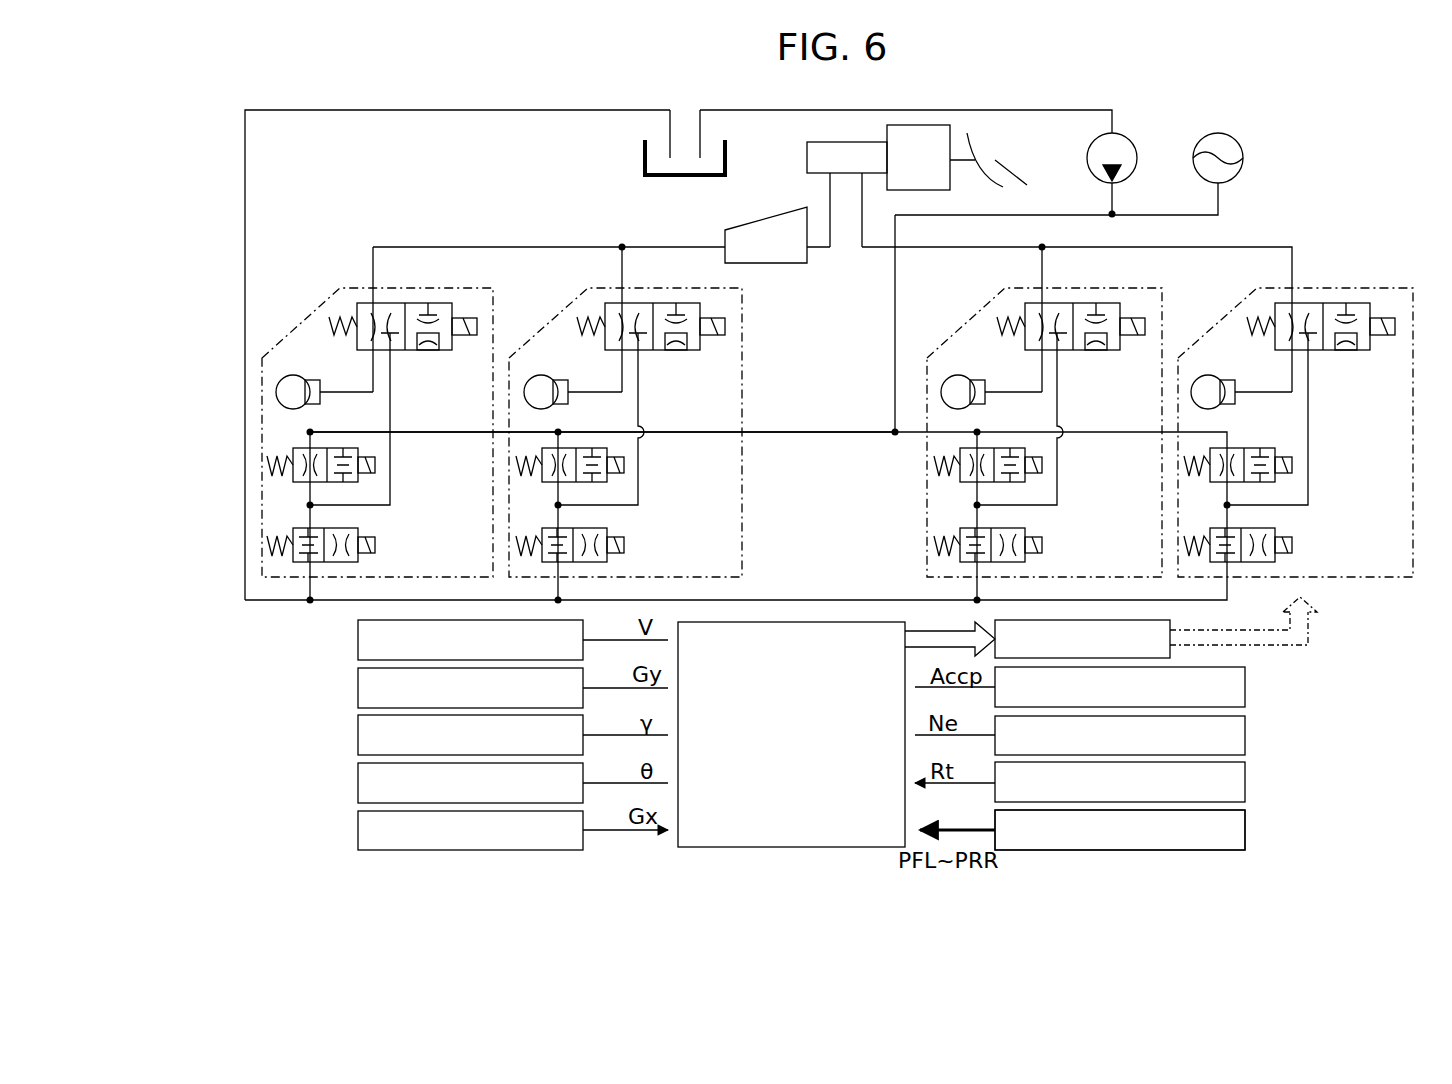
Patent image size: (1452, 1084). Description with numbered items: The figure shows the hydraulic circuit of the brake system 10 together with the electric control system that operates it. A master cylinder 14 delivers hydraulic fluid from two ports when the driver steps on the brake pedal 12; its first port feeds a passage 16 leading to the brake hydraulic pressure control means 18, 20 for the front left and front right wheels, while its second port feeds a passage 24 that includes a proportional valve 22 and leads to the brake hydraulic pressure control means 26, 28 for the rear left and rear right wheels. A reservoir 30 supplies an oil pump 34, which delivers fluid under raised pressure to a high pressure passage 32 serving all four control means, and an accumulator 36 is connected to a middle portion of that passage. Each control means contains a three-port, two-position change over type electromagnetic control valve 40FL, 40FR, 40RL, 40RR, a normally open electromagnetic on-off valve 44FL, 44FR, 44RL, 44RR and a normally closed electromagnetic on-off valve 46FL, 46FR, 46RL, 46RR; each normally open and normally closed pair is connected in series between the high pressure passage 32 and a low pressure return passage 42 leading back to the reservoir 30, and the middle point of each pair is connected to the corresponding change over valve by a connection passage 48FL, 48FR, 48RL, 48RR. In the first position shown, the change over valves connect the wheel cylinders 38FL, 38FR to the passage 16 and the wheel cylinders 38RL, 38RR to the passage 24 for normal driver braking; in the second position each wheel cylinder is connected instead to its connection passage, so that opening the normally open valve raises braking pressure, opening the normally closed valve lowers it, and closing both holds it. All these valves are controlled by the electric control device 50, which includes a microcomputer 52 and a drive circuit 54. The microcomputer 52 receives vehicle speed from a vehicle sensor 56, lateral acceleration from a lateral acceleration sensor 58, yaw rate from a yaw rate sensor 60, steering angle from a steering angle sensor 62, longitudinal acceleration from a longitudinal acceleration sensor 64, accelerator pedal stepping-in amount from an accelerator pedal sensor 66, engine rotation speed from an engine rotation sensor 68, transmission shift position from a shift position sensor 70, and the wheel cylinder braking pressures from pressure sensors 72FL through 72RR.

The brake system 10 is at (230, 168).
The brake pedal 12 is at (1015, 165).
The master cylinder 14 is at (815, 142).
The passage 16 is at (894, 250).
The brake hydraulic pressure control means 18 is at (956, 334).
The brake hydraulic pressure control means 20 is at (1208, 328).
The proportional valve 22 is at (740, 228).
The passage 24 is at (447, 247).
The brake hydraulic pressure control means 26 is at (293, 332).
The brake hydraulic pressure control means 28 is at (540, 332).
The reservoir 30 is at (640, 157).
The high pressure passage 32 is at (894, 357).
The oil pump 34 is at (1136, 160).
The accumulator 36 is at (1243, 158).
The wheel cylinder 38RL is at (302, 408).
The wheel cylinder 38RR is at (550, 408).
The wheel cylinder 38FL is at (970, 408).
The wheel cylinder 38FR is at (1220, 408).
The 3-port/2-position change over type electromagnetic control valve 40RL is at (394, 303).
The 3-port/2-position change over type electromagnetic control valve 40RR is at (639, 303).
The 3-port/2-position change over type electromagnetic control valve 40FL is at (1079, 303).
The 3-port/2-position change over type electromagnetic control valve 40FR is at (1311, 303).
The low pressure passage 42 is at (825, 598).
The normally open type electromagnetic on-off valve 44RL is at (347, 482).
The normally open type electromagnetic on-off valve 44RR is at (594, 482).
The normally open type electromagnetic on-off valve 44FL is at (1015, 480).
The normally open type electromagnetic on-off valve 44FR is at (1265, 480).
The normally closed type electromagnetic on-off valve 46RL is at (345, 528).
The normally closed type electromagnetic on-off valve 46RR is at (595, 528).
The normally closed type electromagnetic on-off valve 46FL is at (1010, 520).
The normally closed type electromagnetic on-off valve 46FR is at (1262, 522).
The connection passage 48RL is at (390, 384).
The connection passage 48RR is at (638, 384).
The connection passage 48FL is at (1057, 384).
The connection passage 48FR is at (1308, 384).
The electric control device 50 is at (1338, 668).
The microcomputer 52 is at (766, 802).
The drive circuit 54 is at (1172, 622).
The vehicle sensor 56 is at (358, 642).
The lateral acceleration sensor 58 is at (358, 690).
The yaw rate sensor 60 is at (358, 737).
The steering angle sensor 62 is at (358, 785).
The longitudinal acceleration sensor 64 is at (358, 833).
The accelerator pedal sensor 66 is at (1247, 684).
The engine rotation sensor 68 is at (1247, 732).
The shift position sensor 70 is at (1247, 780).
The pressure sensor 72FL is at (1247, 828).
The pressure sensor 72RR is at (1211, 830).